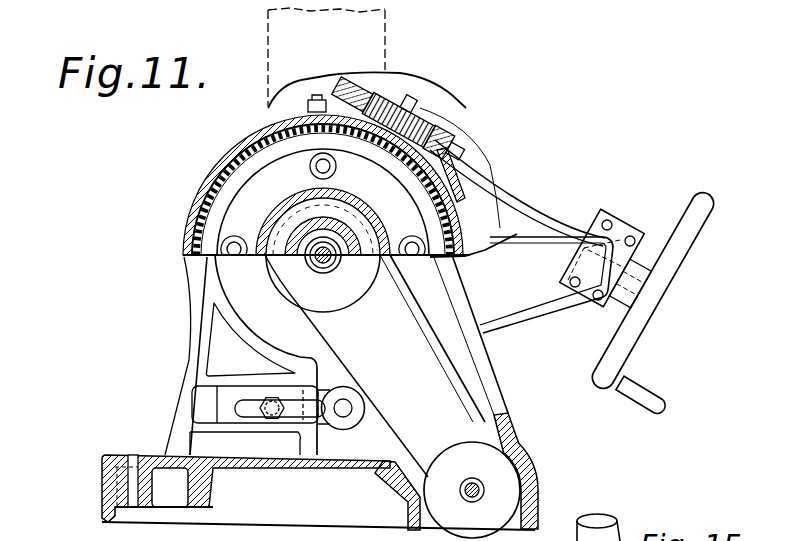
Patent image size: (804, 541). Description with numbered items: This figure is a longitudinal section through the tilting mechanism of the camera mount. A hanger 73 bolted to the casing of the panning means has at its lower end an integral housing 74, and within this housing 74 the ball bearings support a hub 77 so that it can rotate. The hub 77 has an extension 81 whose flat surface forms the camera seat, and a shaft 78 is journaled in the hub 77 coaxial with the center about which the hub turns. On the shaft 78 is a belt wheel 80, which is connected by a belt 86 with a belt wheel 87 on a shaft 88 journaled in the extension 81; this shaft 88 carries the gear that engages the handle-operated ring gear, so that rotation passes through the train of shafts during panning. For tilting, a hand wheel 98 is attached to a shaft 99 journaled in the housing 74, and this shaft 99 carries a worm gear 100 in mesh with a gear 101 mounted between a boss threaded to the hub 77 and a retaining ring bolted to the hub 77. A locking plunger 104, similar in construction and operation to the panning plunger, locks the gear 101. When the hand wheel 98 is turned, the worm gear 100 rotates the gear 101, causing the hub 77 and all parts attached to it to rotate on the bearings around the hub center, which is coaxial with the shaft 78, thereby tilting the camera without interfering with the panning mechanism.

The hanger 73 is at (385, 33).
The housing 74 is at (190, 198).
The hub 77 is at (357, 226).
The shaft 78 is at (321, 263).
The belt wheel 80 is at (364, 290).
The extension 81 is at (156, 455).
The belt 86 is at (423, 330).
The belt wheel 87 is at (508, 493).
The shaft 88 is at (470, 481).
The hand wheel 98 is at (688, 211).
The shaft 99 is at (533, 208).
The worm gear 100 is at (420, 118).
The gear 101 is at (213, 173).
The locking plunger 104 is at (317, 166).